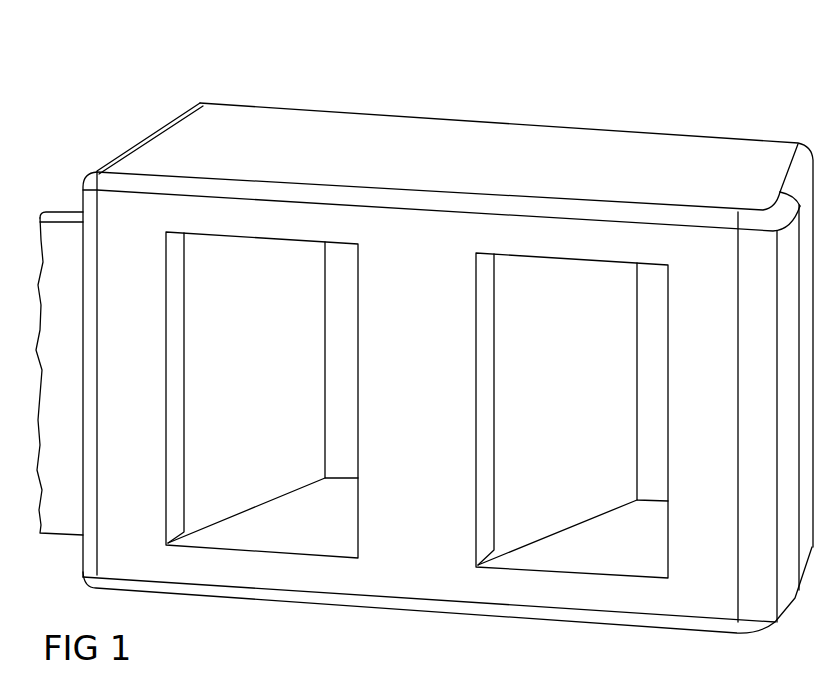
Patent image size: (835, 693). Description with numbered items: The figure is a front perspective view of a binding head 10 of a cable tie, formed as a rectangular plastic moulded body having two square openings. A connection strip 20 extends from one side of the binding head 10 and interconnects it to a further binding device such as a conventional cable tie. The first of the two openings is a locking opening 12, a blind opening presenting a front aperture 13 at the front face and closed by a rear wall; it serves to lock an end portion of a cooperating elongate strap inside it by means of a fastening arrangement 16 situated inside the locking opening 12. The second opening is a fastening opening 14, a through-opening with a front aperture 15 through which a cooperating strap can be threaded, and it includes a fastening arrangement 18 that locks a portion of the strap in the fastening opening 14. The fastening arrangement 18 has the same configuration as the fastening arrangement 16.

The binding head 10 is at (663, 95).
The locking opening 12 is at (640, 540).
The front aperture 13 is at (593, 553).
The fastening opening 14 is at (328, 542).
The front aperture 15 is at (297, 518).
The fastening arrangement 16 is at (532, 468).
The fastening arrangement 18 is at (218, 477).
The connection strip 20 is at (67, 253).